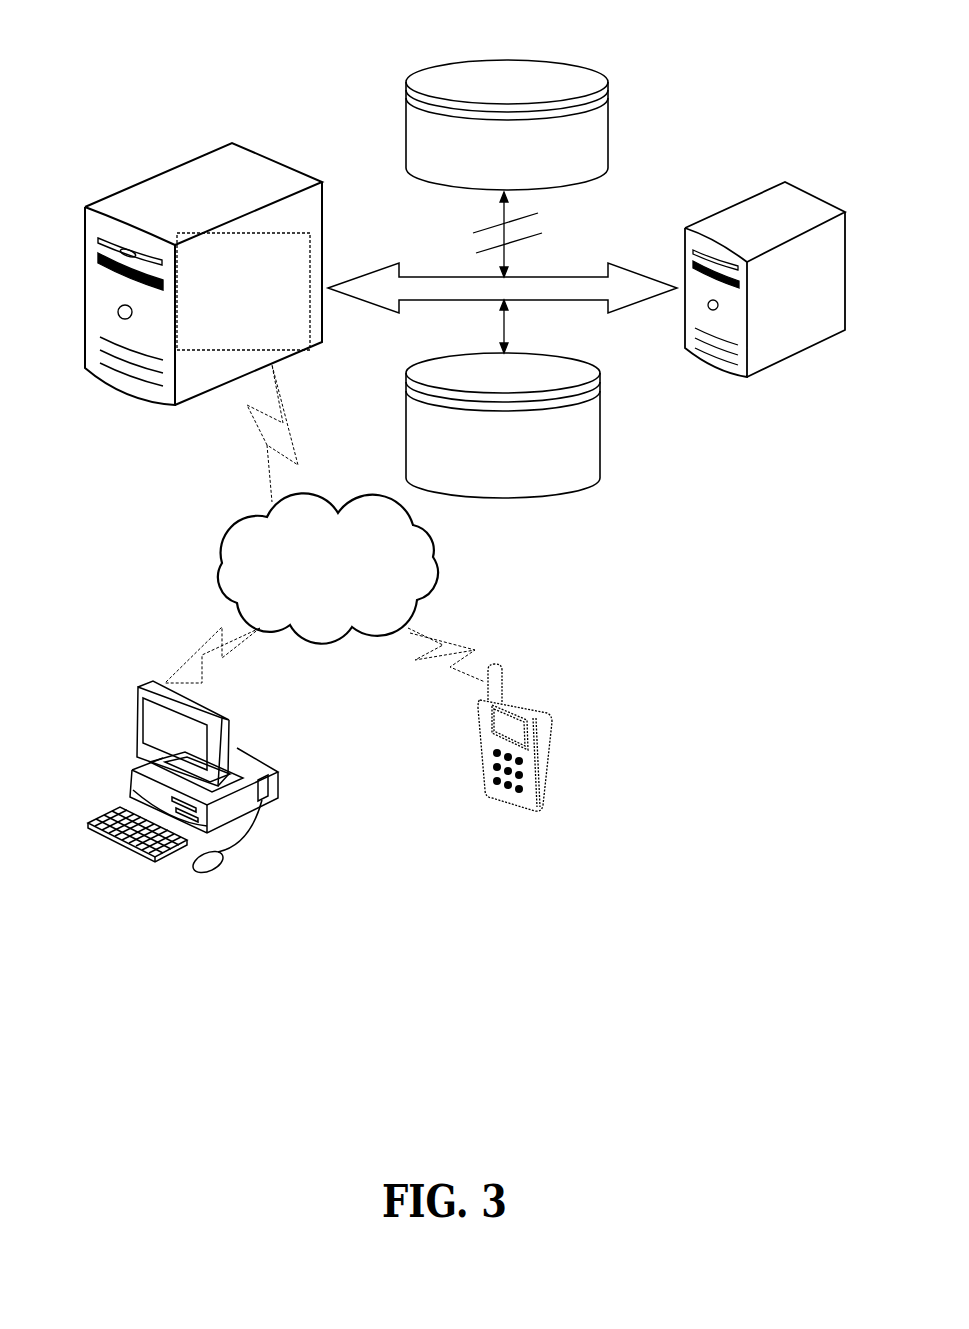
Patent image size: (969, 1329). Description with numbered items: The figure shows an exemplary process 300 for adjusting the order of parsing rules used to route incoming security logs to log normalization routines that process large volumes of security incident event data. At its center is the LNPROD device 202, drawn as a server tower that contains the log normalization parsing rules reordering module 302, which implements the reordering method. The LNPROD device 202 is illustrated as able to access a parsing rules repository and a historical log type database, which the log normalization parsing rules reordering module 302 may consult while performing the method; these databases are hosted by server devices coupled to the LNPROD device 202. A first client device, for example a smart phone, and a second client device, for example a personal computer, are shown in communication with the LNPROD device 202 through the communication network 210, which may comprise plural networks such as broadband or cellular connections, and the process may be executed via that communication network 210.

The process 300 is at (152, 93).
The LNPROD device 202 is at (128, 184).
The log normalization parsing rules reordering module 302 is at (243, 291).
The communication network 210 is at (421, 437).